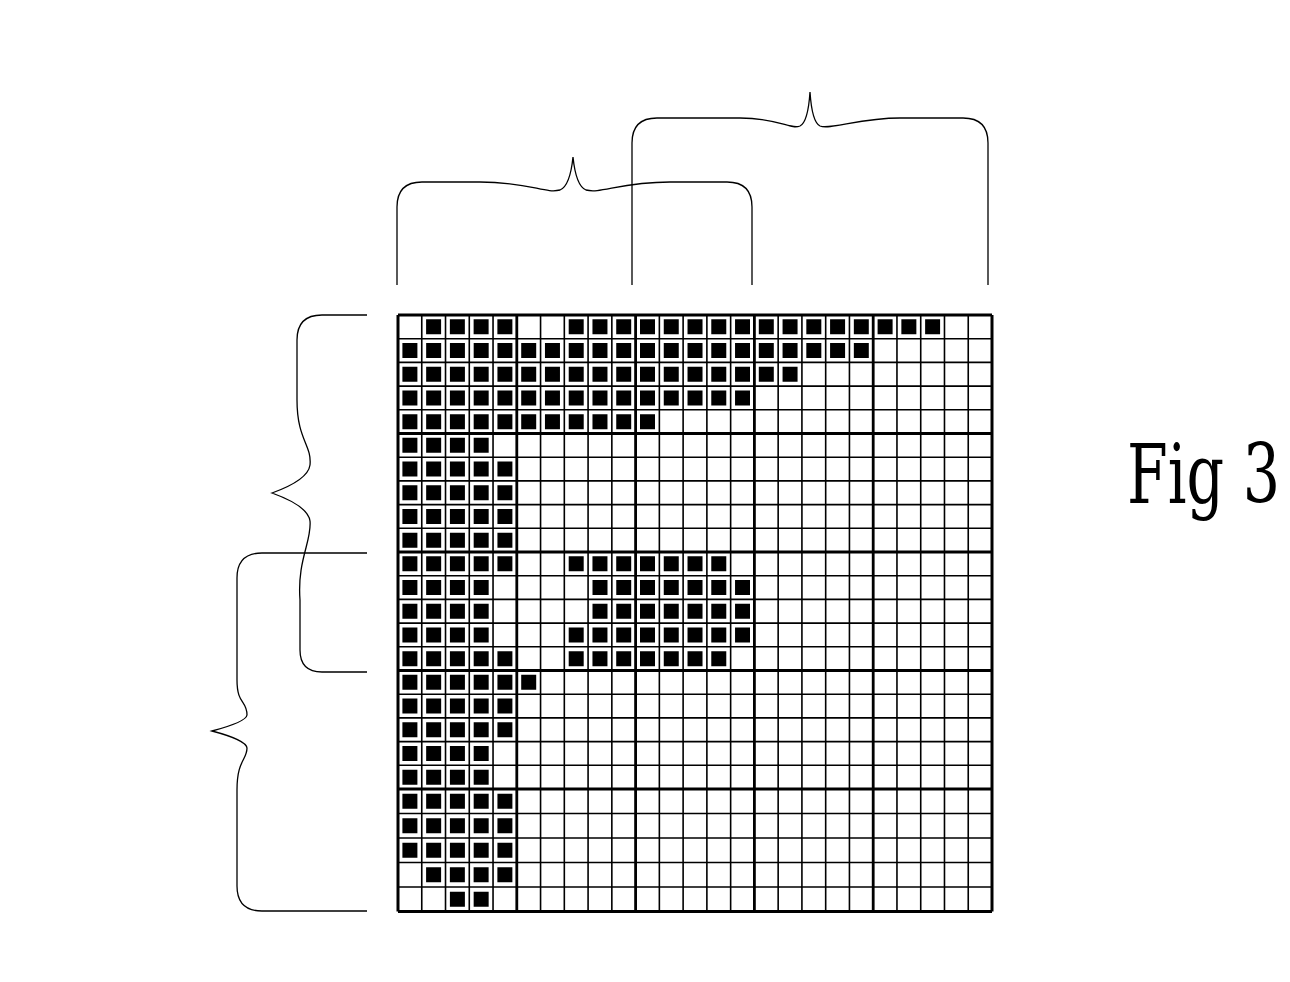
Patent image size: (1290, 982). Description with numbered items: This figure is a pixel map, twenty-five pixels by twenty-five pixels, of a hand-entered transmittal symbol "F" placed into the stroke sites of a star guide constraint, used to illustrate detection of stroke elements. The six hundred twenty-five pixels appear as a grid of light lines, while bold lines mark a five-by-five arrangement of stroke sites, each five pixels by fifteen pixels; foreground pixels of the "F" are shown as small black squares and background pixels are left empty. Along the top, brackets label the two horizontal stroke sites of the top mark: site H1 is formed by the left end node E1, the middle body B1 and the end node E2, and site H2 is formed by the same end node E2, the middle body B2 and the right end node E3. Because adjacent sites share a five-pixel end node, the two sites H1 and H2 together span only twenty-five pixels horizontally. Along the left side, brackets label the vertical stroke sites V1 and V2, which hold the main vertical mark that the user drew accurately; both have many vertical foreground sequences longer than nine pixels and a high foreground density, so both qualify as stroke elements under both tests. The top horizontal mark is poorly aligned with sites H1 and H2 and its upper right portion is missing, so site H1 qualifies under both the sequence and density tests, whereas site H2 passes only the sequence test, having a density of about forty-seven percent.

The left end node E1 is at (457, 587).
The middle body B1 is at (578, 587).
The end node E2 is at (697, 587).
The middle body B2 is at (816, 587).
The right end node E3 is at (935, 587).
The stroke site H1 is at (574, 193).
The stroke site H2 is at (810, 161).
The stroke site V1 is at (288, 493).
The stroke site V2 is at (257, 732).